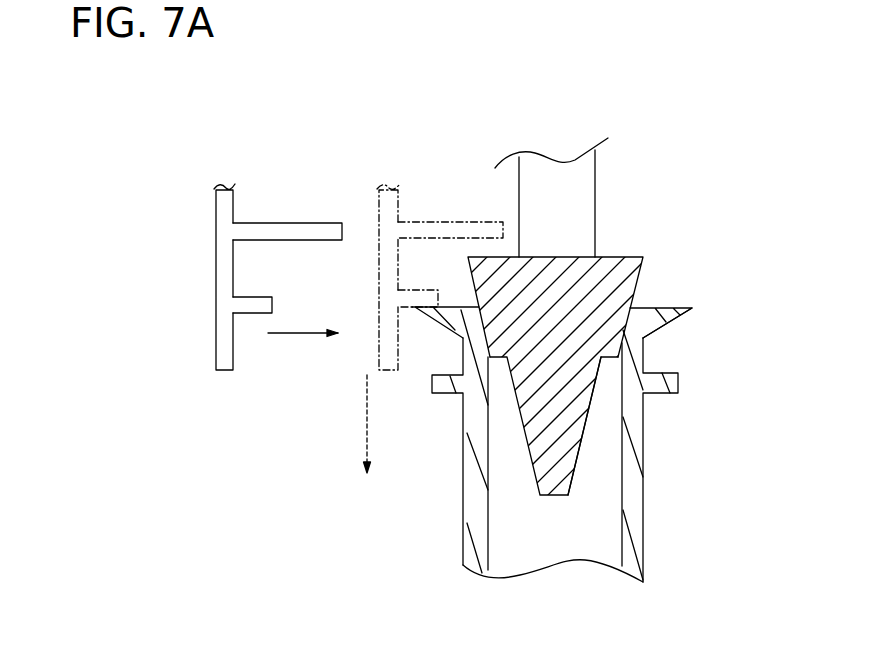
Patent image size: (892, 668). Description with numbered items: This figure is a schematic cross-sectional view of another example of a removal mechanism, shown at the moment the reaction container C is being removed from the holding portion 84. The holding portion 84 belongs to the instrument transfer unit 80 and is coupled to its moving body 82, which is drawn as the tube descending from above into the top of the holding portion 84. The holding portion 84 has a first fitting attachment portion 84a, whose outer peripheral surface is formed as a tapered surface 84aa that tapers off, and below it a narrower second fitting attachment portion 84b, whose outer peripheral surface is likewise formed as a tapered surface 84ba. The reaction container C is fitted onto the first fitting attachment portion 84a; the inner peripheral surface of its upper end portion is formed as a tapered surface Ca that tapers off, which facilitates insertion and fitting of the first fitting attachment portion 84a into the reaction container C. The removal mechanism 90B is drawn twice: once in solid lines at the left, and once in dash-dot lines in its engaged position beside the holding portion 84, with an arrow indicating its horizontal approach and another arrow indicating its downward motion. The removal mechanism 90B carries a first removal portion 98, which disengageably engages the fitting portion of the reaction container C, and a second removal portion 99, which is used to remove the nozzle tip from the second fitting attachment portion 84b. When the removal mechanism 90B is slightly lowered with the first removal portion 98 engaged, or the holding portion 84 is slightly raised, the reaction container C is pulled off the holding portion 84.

The instrument transfer unit 80 is at (552, 122).
The moving body 82 is at (557, 208).
The holding portion 84 is at (493, 395).
The first fitting attachment portion 84a is at (598, 298).
The tapered surface 84aa is at (628, 318).
The second fitting attachment portion 84b is at (560, 437).
The tapered surface 84ba is at (587, 418).
The removal mechanism 90B is at (218, 168).
The first removal portion 98 is at (252, 297).
The second removal portion 99 is at (277, 223).
The reaction container C is at (571, 445).
The tapered surface Ca is at (618, 317).